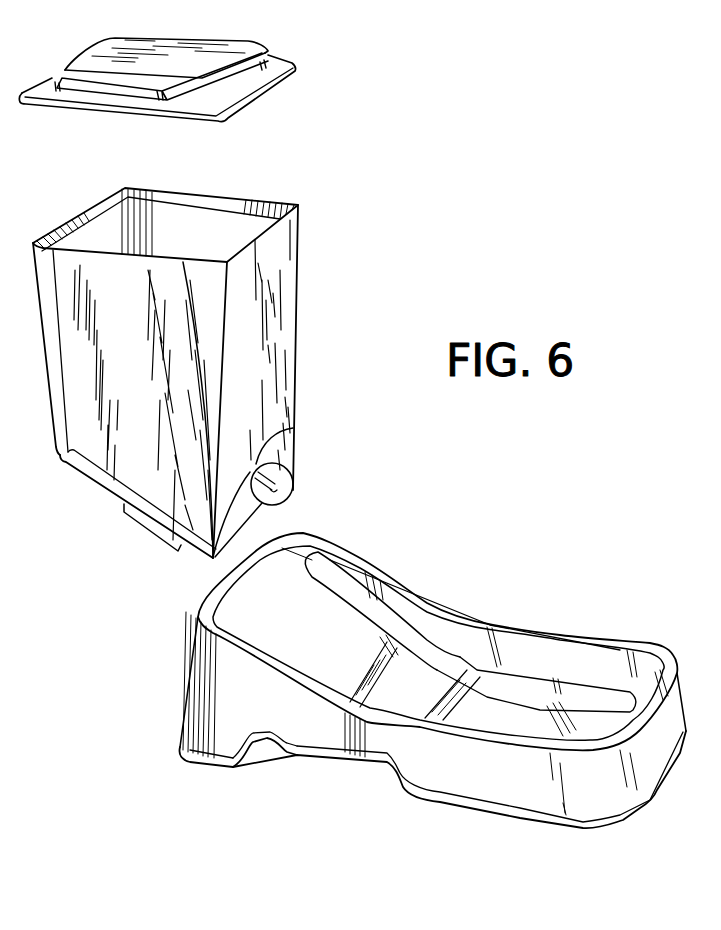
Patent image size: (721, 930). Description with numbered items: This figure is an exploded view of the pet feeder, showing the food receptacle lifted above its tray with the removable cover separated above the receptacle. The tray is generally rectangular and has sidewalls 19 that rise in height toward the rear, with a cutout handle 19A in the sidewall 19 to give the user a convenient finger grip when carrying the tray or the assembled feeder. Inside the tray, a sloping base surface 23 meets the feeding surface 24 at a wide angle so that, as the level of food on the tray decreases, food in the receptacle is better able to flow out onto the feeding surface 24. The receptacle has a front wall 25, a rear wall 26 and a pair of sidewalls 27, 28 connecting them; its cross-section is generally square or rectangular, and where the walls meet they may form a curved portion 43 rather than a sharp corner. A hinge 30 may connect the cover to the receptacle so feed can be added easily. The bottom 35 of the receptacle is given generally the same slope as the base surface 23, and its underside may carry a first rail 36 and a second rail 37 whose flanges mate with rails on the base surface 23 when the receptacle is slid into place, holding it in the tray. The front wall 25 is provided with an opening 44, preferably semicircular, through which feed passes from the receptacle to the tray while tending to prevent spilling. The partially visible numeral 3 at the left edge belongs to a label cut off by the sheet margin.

The container 3 is at (34, 349).
The sidewall 19 is at (307, 728).
The handle 19A is at (283, 753).
The sloping base surface 23 is at (363, 653).
The feeding surface 24 is at (183, 192).
The front wall 25 is at (270, 349).
The rear wall 26 is at (93, 208).
The sidewall 27 is at (237, 190).
The sidewall 28 is at (141, 391).
The hinge 30 is at (313, 576).
The bottom 35 is at (88, 482).
The first rail 36 is at (137, 527).
The second rail 37 is at (283, 508).
The curved portion 43 is at (222, 237).
The opening 44 is at (297, 428).